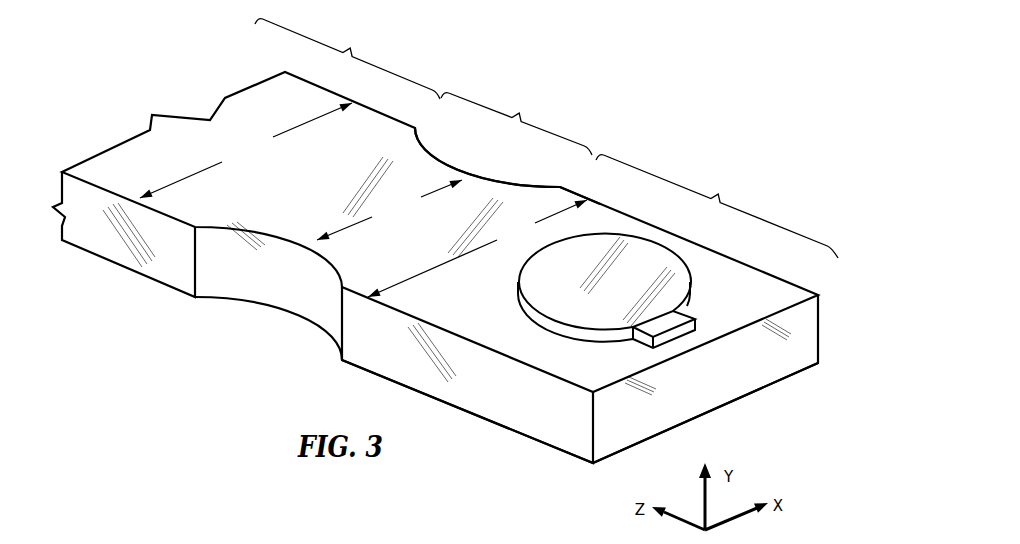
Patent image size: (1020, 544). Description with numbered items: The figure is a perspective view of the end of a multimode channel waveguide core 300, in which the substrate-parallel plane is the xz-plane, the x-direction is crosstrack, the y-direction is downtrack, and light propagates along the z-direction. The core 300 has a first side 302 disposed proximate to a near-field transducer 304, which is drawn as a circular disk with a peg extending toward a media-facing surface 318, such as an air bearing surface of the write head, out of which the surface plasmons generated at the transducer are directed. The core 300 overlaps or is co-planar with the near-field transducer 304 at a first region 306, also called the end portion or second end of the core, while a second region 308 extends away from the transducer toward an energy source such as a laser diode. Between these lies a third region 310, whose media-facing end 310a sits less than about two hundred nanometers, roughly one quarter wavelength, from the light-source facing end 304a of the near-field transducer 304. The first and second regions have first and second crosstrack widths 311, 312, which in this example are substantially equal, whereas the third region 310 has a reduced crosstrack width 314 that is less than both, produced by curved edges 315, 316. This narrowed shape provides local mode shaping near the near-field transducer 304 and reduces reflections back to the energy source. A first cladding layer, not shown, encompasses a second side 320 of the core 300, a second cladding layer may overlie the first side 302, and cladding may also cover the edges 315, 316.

The multimode channel waveguide core 300 is at (435, 260).
The first side 302 is at (260, 102).
The near-field transducer 304 is at (583, 268).
The light-source facing end 304a is at (538, 247).
The first region 306 is at (717, 206).
The second region 308 is at (347, 59).
The third region 310 is at (516, 124).
The media-facing end 310a is at (561, 187).
The first crosstrack width 311 is at (477, 248).
The second crosstrack width 312 is at (246, 150).
The reduced crosstrack width 314 is at (389, 210).
The curved edge 315 is at (287, 301).
The curved edge 316 is at (488, 181).
The media-facing surface 318 is at (745, 388).
The second side 320 is at (477, 415).